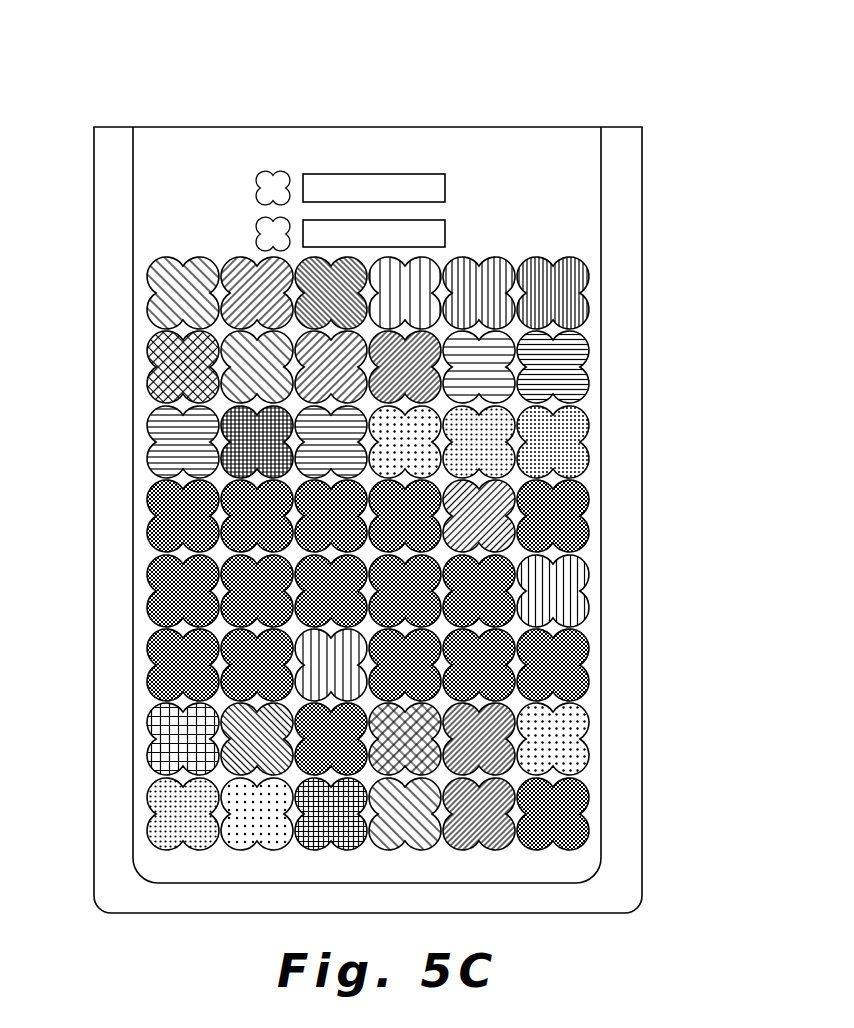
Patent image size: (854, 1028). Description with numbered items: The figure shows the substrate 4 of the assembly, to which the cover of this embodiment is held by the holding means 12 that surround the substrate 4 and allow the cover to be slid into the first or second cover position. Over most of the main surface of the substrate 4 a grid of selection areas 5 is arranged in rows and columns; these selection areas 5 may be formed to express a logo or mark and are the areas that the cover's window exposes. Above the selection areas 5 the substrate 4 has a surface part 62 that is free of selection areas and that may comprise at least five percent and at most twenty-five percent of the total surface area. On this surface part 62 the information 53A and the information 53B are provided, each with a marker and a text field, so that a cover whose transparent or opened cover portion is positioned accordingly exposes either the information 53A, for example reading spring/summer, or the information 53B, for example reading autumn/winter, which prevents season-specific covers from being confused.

The substrate 4 is at (192, 868).
The selection areas 5 is at (157, 428).
The holding means 12 is at (622, 302).
The information 53A is at (363, 186).
The information 53B is at (345, 228).
The surface part 62 is at (537, 218).